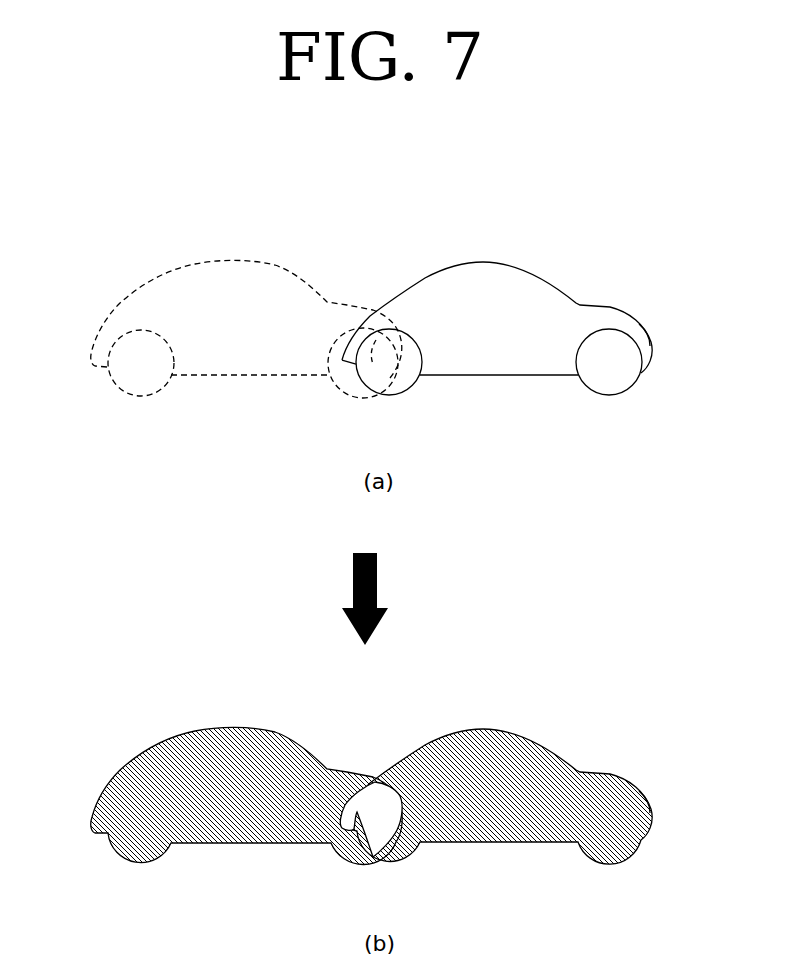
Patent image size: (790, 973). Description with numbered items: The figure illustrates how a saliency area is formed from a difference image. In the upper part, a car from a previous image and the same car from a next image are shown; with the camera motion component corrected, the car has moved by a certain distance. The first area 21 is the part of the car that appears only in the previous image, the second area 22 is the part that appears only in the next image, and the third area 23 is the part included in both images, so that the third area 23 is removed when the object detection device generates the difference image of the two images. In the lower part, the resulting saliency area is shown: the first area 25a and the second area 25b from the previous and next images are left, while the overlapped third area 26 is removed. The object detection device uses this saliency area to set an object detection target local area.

The first area 21 is at (211, 260).
The second area 22 is at (460, 262).
The third area 23 is at (350, 392).
The first area 25a is at (212, 729).
The second area 25b is at (460, 729).
The overlapped third area 26 is at (373, 848).